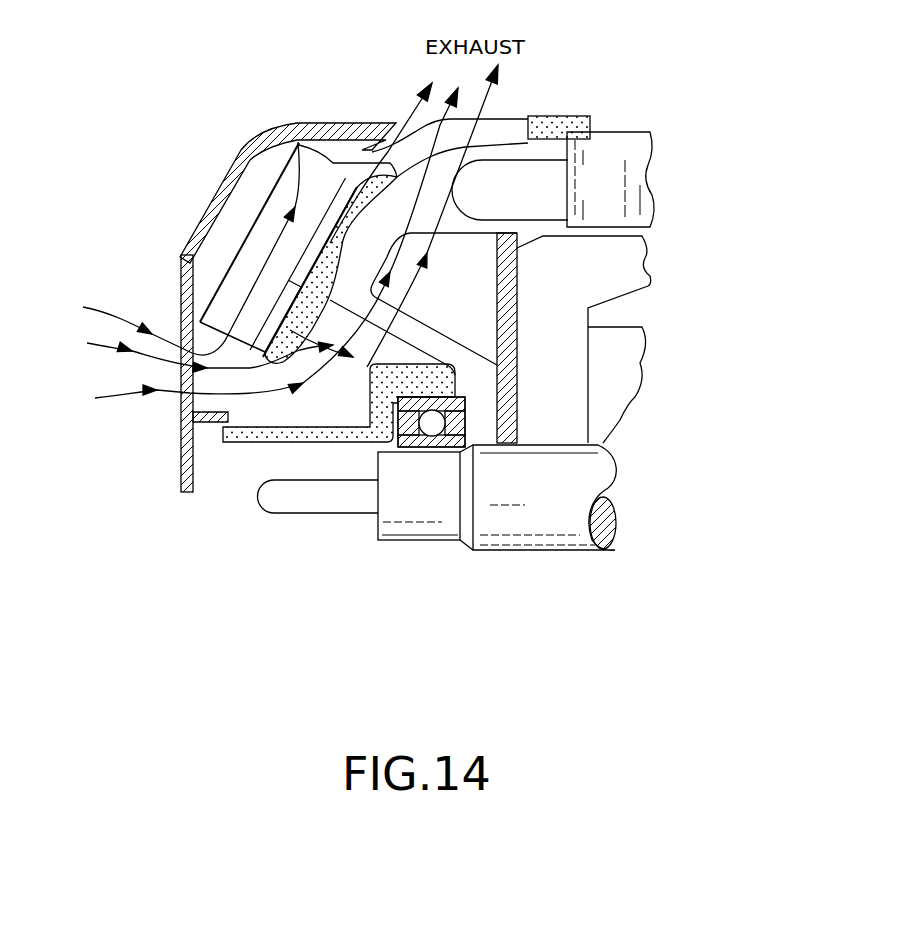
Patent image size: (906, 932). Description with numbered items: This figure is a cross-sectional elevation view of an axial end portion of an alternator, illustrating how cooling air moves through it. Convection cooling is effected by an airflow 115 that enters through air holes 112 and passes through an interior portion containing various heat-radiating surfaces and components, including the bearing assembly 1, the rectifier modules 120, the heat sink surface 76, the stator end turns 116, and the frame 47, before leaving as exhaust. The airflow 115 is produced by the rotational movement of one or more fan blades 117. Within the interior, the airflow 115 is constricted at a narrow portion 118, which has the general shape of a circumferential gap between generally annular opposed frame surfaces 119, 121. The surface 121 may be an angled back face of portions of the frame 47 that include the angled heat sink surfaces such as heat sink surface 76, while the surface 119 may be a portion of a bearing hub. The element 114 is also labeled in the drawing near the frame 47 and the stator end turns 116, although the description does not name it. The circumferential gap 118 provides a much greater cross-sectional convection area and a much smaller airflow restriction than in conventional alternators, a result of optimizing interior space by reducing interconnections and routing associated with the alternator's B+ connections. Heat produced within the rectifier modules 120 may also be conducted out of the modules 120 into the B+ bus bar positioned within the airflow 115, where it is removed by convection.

The bearing assembly 1 is at (440, 453).
The frame 47 is at (583, 127).
The heat sink surface 76 is at (290, 312).
The air holes 112 is at (181, 413).
The seal 114 is at (520, 117).
The airflow 115 is at (270, 393).
The stator end turns 116 is at (560, 185).
The fan blades 117 is at (475, 295).
The narrow portion 118 is at (350, 350).
The frame surface 119 is at (372, 375).
The modules 120 is at (260, 215).
The frame surface 121 is at (362, 325).